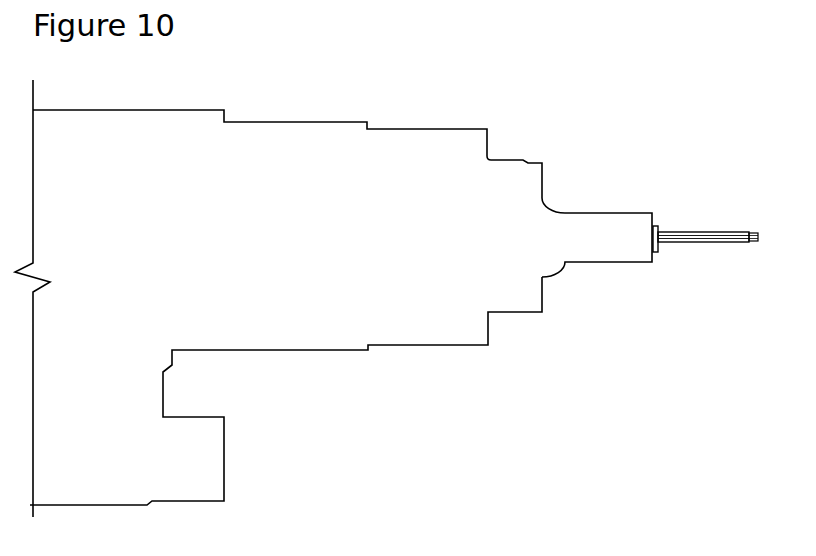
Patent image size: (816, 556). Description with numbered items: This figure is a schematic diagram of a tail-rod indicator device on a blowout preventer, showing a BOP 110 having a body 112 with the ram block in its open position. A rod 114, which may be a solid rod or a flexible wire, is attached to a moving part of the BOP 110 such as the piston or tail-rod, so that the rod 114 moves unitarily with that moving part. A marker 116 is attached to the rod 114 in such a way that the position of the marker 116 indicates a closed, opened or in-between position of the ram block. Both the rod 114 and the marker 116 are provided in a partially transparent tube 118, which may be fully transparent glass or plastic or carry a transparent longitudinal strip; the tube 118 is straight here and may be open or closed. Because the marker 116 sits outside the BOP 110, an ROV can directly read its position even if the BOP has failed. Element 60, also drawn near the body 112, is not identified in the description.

The BOP 110 is at (293, 101).
The body 112 is at (250, 198).
The hosel block 60 is at (595, 213).
The rod 114 is at (675, 238).
The partially transparent tube 118 is at (717, 231).
The marker 116 is at (751, 243).